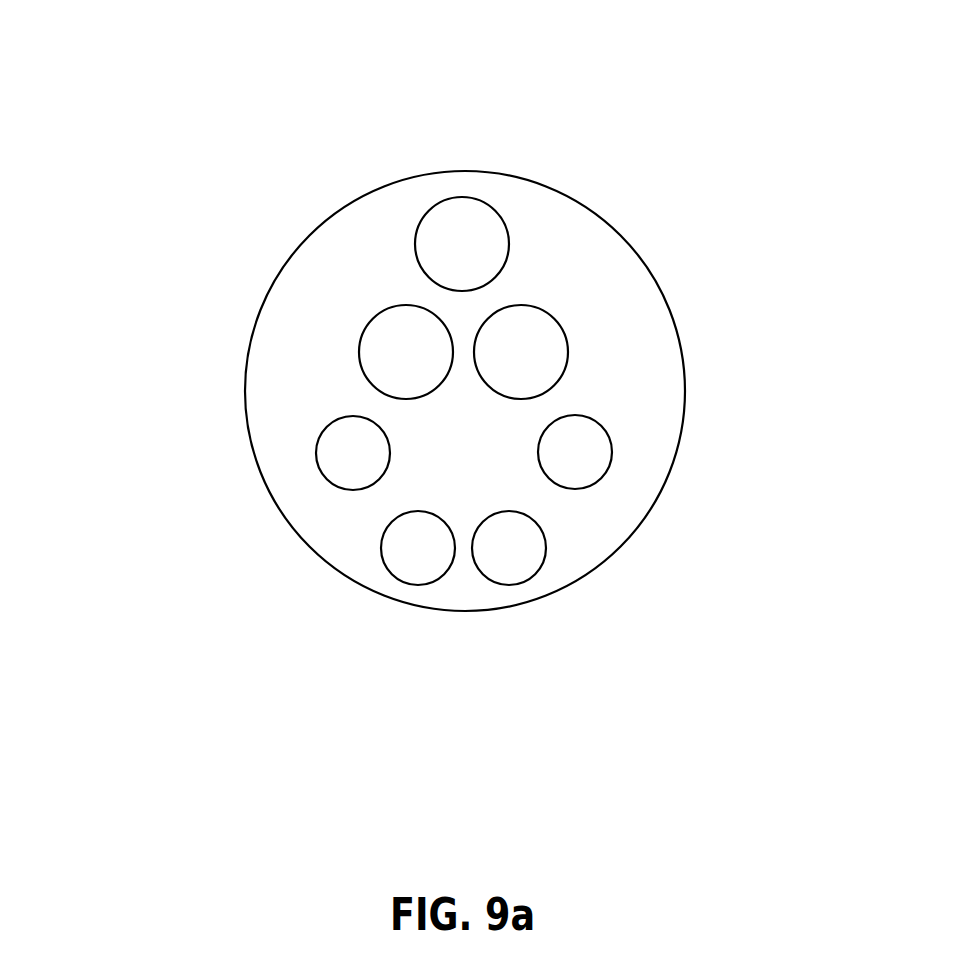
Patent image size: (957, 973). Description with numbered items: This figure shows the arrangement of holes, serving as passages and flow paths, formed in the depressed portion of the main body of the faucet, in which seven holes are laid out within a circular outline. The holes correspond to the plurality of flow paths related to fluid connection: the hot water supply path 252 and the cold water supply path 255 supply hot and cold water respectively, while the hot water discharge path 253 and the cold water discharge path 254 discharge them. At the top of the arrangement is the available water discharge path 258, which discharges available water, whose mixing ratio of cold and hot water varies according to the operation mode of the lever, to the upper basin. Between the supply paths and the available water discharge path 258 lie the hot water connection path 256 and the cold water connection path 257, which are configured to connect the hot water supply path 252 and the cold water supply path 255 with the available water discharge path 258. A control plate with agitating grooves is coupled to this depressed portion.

The hot water supply path 252 is at (355, 450).
The hot water discharge path 253 is at (422, 550).
The cold water discharge path 254 is at (507, 552).
The cold water supply path 255 is at (572, 450).
The hot water connection path 256 is at (402, 347).
The cold water connection path 257 is at (525, 347).
The available water discharge path 258 is at (467, 222).